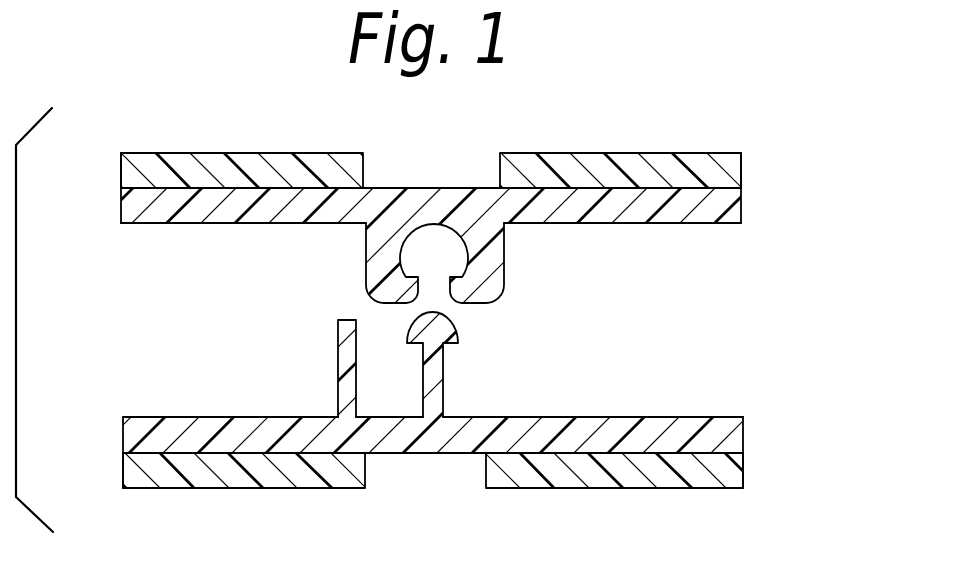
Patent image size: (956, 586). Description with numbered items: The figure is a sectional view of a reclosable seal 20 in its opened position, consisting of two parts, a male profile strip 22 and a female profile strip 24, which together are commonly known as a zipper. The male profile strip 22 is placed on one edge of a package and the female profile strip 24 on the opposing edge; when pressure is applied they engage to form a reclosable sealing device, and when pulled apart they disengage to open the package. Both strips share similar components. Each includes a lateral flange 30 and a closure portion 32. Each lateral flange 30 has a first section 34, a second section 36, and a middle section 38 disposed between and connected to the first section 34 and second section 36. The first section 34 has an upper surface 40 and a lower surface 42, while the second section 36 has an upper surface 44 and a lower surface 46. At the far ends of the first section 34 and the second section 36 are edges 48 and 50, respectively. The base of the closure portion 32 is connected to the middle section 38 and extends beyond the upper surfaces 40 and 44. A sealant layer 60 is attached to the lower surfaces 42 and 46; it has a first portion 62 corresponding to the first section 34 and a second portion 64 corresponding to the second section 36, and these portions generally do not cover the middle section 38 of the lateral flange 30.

The reclosable seal 20 is at (122, 317).
The male profile strip 22 is at (358, 512).
The female profile strip 24 is at (416, 164).
The lateral flange 30 is at (757, 203).
The closure portion 32 is at (522, 277).
The first section 34 is at (644, 210).
The second section 36 is at (294, 212).
The middle section 38 is at (462, 186).
The upper surface 40 is at (708, 223).
The lower surface 42 is at (690, 184).
The upper surface 44 is at (187, 223).
The lower surface 46 is at (153, 188).
The edge 48 is at (743, 216).
The edge 50 is at (121, 206).
The sealant layer 60 is at (481, 318).
The first portion 62 is at (590, 165).
The second portion 64 is at (240, 160).